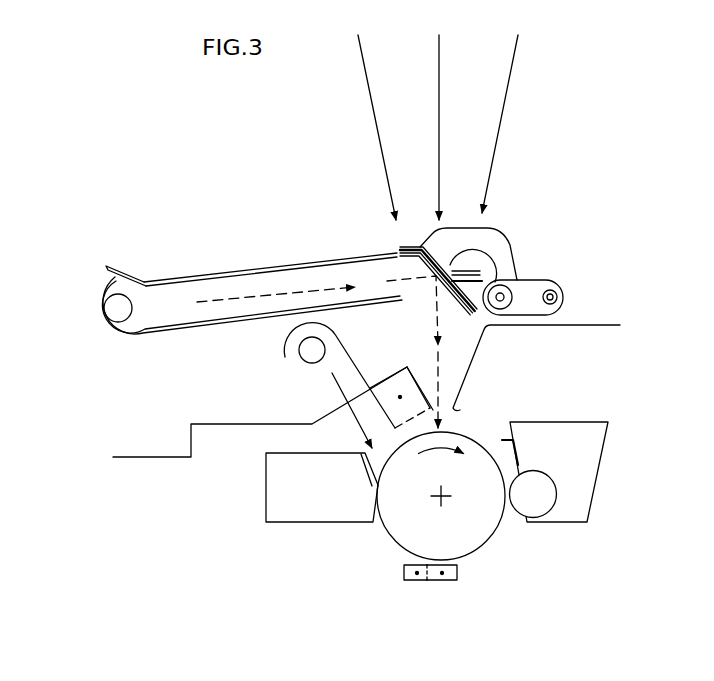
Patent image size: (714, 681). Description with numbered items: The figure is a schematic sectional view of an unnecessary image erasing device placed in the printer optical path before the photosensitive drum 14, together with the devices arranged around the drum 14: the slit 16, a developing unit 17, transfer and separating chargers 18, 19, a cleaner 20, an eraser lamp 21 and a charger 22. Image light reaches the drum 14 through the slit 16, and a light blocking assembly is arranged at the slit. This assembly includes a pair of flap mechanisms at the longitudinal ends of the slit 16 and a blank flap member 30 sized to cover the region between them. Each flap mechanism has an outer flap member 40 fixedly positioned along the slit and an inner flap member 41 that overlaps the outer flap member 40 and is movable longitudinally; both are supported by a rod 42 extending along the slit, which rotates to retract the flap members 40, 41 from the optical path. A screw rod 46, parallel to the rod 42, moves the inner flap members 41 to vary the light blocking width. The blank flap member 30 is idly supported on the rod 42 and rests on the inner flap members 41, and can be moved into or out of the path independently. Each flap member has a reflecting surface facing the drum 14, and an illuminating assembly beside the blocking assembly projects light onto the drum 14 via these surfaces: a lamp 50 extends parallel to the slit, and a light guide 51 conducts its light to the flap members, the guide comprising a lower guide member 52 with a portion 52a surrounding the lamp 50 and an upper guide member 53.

The drum 14 is at (483, 528).
The slit 16 is at (455, 404).
The developing unit 17 is at (580, 472).
The transfer charger 18 is at (448, 580).
The separating charger 19 is at (413, 580).
The cleaner 20 is at (318, 508).
The eraser lamp 21 is at (305, 365).
The charger 22 is at (397, 385).
The flap member for a blank portion 30 is at (413, 245).
The outer flap member 40 is at (397, 255).
The inner flap member 41 is at (405, 248).
The rod 42 is at (506, 292).
The screw rod 46 is at (563, 297).
The lamp 50 is at (112, 322).
The light guide 51 is at (222, 283).
The lower guide member 52 is at (188, 326).
The portion surrounding the lamp 52a is at (93, 288).
The upper guide member 53 is at (182, 278).